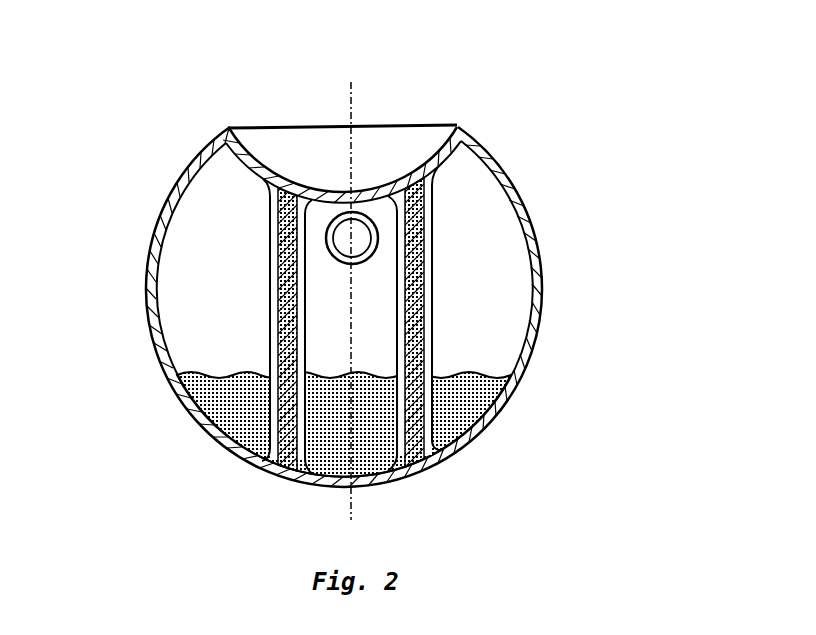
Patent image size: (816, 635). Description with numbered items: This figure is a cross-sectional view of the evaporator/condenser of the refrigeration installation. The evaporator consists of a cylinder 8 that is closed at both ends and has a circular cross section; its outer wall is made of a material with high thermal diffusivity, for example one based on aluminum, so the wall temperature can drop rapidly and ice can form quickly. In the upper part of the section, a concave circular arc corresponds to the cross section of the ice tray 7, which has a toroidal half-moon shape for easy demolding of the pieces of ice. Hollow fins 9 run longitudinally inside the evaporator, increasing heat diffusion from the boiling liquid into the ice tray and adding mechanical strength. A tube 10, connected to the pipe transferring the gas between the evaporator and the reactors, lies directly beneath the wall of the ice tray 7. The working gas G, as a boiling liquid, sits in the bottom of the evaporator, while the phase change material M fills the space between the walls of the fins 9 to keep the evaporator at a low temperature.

The ice tray 7 is at (392, 152).
The cylinder 8 is at (537, 250).
The hollow fins 9 is at (272, 278).
The tube 10 is at (337, 238).
The phase change material M is at (287, 313).
The working gas G is at (453, 407).